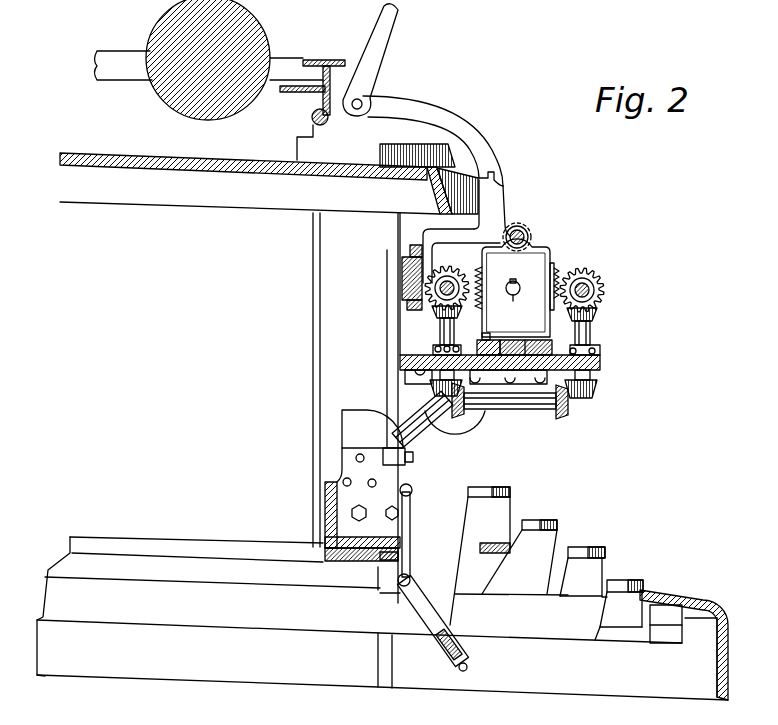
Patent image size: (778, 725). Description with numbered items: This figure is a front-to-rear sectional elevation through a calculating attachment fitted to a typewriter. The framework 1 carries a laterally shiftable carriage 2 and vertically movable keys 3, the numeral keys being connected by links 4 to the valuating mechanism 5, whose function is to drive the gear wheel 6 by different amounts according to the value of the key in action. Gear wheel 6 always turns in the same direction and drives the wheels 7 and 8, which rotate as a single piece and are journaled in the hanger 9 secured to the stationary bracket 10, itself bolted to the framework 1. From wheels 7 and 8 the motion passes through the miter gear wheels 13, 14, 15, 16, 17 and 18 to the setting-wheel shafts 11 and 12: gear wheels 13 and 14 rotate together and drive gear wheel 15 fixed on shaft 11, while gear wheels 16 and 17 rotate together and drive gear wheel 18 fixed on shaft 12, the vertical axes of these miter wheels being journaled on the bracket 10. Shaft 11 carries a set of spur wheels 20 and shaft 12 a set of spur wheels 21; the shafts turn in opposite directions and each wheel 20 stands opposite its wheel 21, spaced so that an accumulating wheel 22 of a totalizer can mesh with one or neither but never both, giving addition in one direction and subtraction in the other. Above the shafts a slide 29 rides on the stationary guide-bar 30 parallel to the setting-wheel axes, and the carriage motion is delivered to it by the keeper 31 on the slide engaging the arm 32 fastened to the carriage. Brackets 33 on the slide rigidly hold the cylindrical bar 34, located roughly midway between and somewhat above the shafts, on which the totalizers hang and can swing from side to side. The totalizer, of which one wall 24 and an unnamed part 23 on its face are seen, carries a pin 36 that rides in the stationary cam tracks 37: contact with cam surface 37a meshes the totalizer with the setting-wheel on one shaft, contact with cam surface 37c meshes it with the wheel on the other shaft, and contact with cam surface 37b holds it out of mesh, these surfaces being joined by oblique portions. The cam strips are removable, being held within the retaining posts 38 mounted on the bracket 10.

The framework 1 is at (155, 195).
The carriage 2 is at (278, 80).
The keys 3 is at (503, 510).
The links 4 is at (408, 546).
The valuating mechanism 5 is at (342, 478).
The gear wheel 6 is at (455, 416).
The wheel 7 is at (460, 420).
The wheel 8 is at (575, 416).
The hanger 9 is at (508, 412).
The stationary bracket 10 is at (600, 365).
The setting-wheel shaft 11 is at (594, 292).
The setting-wheel shaft 12 is at (436, 290).
The miter gear wheel 13 is at (598, 398).
The miter gear wheel 14 is at (594, 316).
The miter gear wheel 15 is at (440, 390).
The miter gear wheel 16 is at (440, 311).
The miter gear wheel 17 is at (600, 306).
The miter gear wheel 18 is at (405, 292).
The spur wheels 20 is at (591, 273).
The spur wheels 21 is at (453, 279).
The accumulating wheels 22 is at (553, 272).
The pointer 23 is at (513, 302).
The wall 24 is at (527, 262).
The slide 29 is at (410, 244).
The guide-bar 30 is at (400, 265).
The keeper 31 is at (498, 205).
The arm 32 is at (472, 140).
The brackets 33 is at (428, 236).
The bar 34 is at (524, 230).
The pin 36 is at (484, 340).
The cam tracks 37 is at (527, 342).
The cam surface 37a is at (410, 368).
The cam surface 37b is at (513, 372).
The cam surface 37c is at (567, 343).
The retaining posts 38 is at (586, 351).